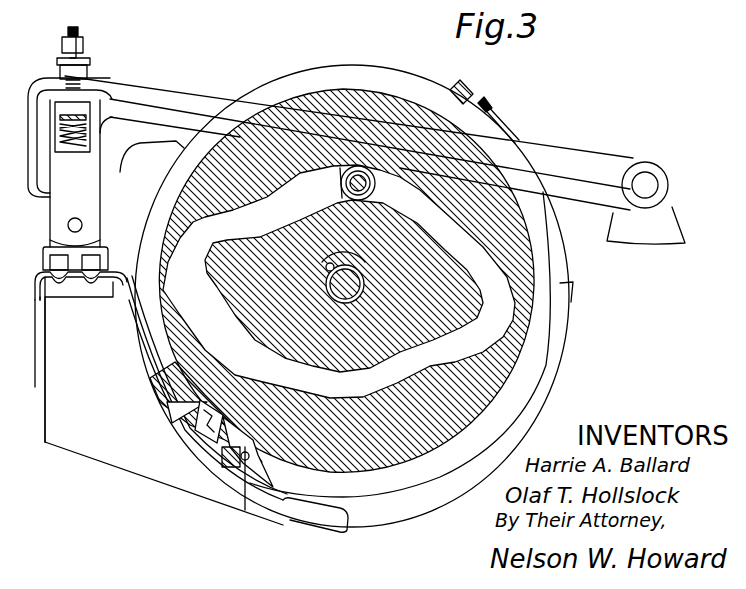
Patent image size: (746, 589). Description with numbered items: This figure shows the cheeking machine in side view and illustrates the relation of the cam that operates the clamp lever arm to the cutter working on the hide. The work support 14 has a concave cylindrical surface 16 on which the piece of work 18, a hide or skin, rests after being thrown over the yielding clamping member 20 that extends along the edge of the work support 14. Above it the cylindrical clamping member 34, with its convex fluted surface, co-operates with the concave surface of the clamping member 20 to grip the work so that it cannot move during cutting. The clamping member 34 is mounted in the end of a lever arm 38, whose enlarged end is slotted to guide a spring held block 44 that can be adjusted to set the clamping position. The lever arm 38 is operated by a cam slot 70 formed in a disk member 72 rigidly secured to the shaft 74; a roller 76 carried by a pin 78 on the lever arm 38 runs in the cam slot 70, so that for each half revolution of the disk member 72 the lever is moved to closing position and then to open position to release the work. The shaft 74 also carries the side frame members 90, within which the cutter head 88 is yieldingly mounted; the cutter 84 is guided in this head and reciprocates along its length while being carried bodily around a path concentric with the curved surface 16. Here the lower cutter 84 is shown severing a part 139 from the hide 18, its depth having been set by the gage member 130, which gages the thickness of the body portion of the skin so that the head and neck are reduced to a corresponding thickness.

The work support 14 is at (132, 430).
The concave cylindrical surface 16 is at (148, 372).
The piece of work 18 is at (147, 343).
The clamping member 20 is at (87, 283).
The cylindrical clamping member 34 is at (90, 262).
The lever arm 38 is at (160, 100).
The block 44 is at (85, 180).
The cam slot 70 is at (507, 307).
The disk member 72 is at (522, 330).
The shaft 74 is at (356, 273).
The roller 76 is at (374, 191).
The pin 78 is at (340, 188).
The cutter 84 is at (220, 420).
The cutter head 88 is at (188, 425).
The side frame member 90 is at (528, 373).
The gage member 130 is at (247, 463).
The severed part 139 is at (227, 455).